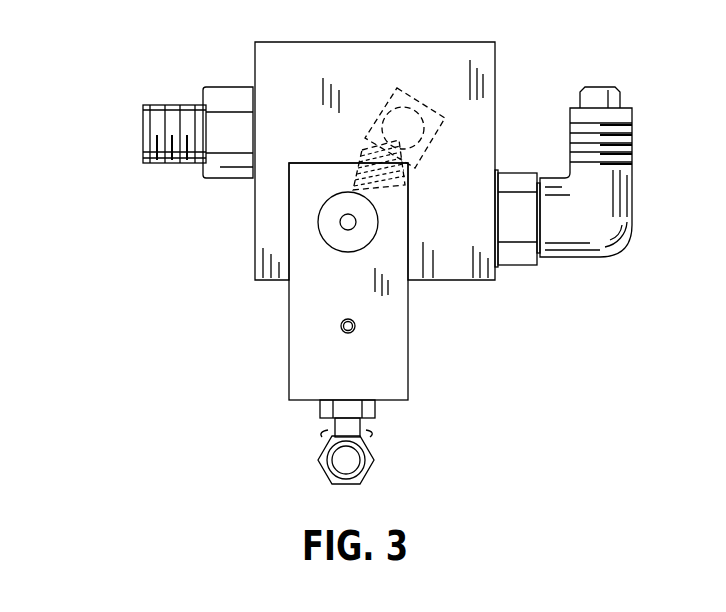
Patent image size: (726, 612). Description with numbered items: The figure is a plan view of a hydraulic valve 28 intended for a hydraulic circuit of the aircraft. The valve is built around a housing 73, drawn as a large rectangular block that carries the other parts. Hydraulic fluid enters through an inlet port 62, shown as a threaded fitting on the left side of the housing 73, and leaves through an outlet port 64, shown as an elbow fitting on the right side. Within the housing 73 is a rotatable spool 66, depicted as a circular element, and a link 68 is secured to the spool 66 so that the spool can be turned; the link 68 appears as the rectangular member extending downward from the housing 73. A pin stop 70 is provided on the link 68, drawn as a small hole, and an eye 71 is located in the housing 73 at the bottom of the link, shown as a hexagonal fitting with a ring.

The hydraulic valve 28 is at (150, 454).
The inlet port 62 is at (187, 162).
The outlet port 64 is at (607, 195).
The rotatable spool 66 is at (322, 217).
The link 68 is at (374, 367).
The pin stop 70 is at (356, 328).
The eye 71 is at (352, 461).
The housing 73 is at (495, 65).